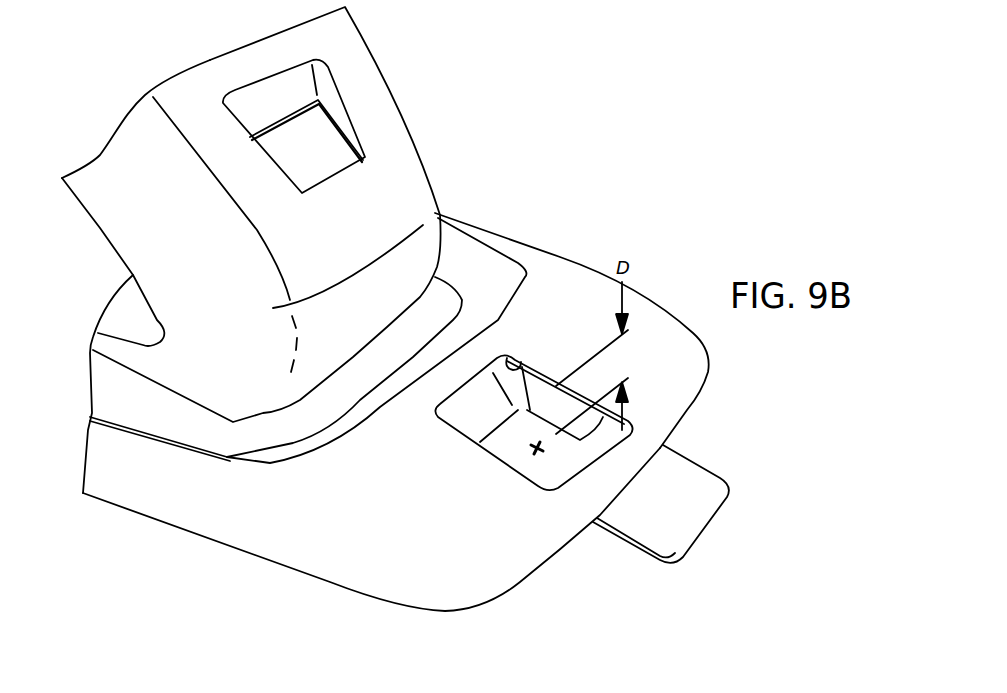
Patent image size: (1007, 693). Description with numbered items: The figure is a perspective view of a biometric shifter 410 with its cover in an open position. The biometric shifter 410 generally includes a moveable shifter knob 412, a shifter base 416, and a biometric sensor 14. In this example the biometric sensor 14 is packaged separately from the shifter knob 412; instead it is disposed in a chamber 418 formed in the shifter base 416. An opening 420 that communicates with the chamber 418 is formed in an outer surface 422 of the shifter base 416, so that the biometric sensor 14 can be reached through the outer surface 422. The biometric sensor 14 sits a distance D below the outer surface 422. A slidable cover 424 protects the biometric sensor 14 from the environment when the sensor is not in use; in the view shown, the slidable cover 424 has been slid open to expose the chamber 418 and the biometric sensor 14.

The biometric shifter 410 is at (569, 114).
The moveable shifter knob 412 is at (375, 107).
The shifter base 416 is at (540, 272).
The chamber 418 is at (453, 423).
The opening 420 is at (512, 365).
The outer surface 422 is at (365, 547).
The slidable cover 424 is at (697, 508).
The biometric sensor 14 is at (538, 468).